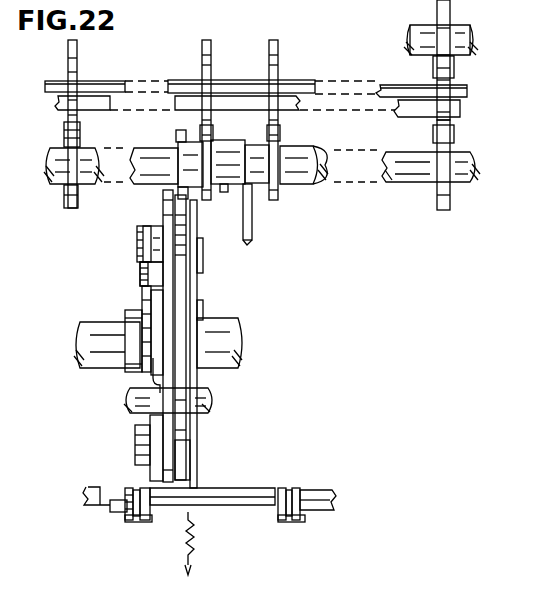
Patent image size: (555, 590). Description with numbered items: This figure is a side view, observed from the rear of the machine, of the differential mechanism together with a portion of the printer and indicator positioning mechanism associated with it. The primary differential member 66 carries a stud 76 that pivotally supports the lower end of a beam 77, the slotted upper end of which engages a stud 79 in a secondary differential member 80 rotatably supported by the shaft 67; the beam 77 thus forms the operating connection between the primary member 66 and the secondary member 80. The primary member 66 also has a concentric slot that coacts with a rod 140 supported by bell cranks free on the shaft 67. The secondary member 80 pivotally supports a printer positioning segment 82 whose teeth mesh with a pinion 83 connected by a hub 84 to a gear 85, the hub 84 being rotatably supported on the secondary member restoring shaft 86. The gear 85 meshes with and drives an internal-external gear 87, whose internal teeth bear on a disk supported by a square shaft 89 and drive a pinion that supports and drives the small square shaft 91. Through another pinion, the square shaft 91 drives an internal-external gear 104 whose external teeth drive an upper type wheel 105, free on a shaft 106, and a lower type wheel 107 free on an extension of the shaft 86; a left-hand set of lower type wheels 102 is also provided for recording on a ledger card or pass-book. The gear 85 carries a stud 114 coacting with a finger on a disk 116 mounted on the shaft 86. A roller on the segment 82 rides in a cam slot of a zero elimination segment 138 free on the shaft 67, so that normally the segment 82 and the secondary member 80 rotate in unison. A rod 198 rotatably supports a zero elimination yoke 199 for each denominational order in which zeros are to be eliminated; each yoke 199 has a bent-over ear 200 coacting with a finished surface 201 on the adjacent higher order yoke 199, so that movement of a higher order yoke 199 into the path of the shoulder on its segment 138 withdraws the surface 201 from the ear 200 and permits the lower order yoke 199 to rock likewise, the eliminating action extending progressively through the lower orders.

The primary differential member 66 is at (155, 299).
The shaft 67 is at (236, 330).
The stud 76 is at (139, 442).
The beam 77 is at (141, 278).
The stud 79 is at (137, 240).
The secondary differential member 80 is at (165, 212).
The printer positioning segment 82 is at (177, 215).
The pinion 83 is at (178, 128).
The hub 84 is at (193, 180).
The gear 85 is at (272, 130).
The secondary member restoring shaft 86 is at (46, 170).
The internal-external gear 87 is at (203, 53).
The square shaft 89 is at (172, 105).
The square shaft 91 is at (238, 87).
The lower type wheels 102 is at (65, 190).
The internal-external gear 104 is at (68, 52).
The upper type wheel 105 is at (450, 12).
The shaft 106 is at (474, 36).
The lower type wheel 107 is at (452, 190).
The stud 114 is at (217, 163).
The disk 116 is at (226, 178).
The zero elimination segment 138 is at (194, 292).
The rod 140 is at (214, 402).
The rod 198 is at (315, 512).
The zero elimination yoke 199 is at (100, 490).
The bent-over ear 200 is at (135, 524).
The finished surface 201 is at (160, 523).